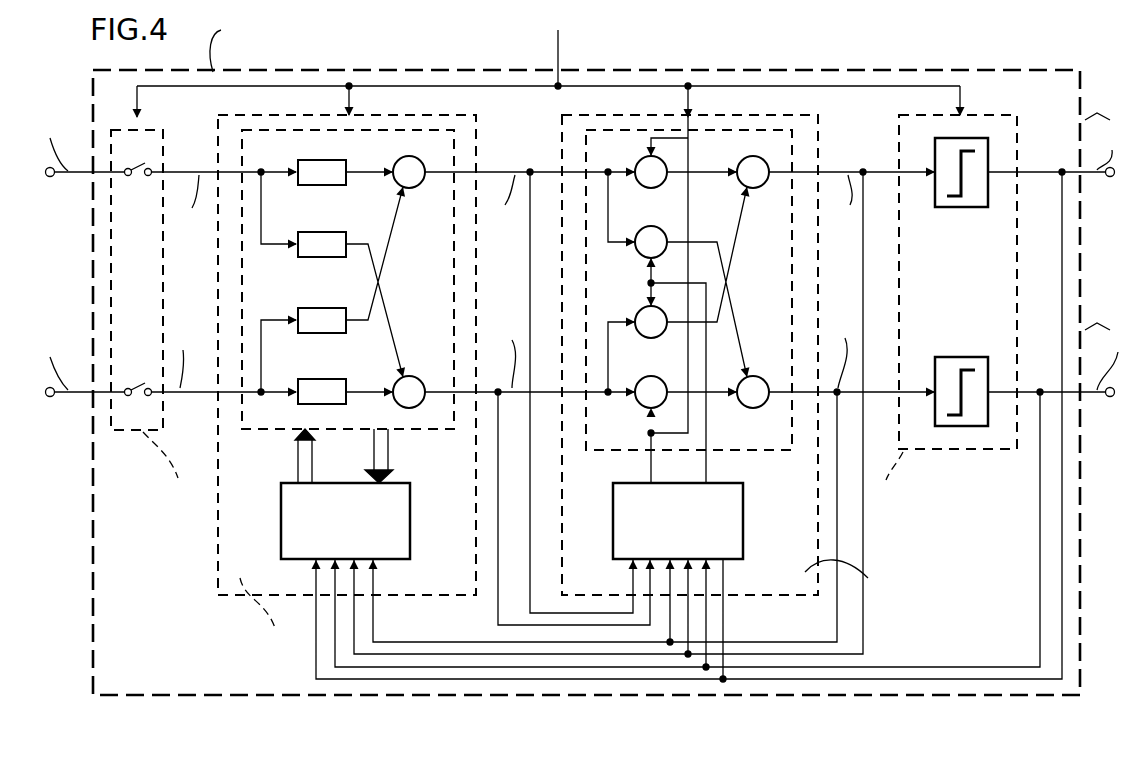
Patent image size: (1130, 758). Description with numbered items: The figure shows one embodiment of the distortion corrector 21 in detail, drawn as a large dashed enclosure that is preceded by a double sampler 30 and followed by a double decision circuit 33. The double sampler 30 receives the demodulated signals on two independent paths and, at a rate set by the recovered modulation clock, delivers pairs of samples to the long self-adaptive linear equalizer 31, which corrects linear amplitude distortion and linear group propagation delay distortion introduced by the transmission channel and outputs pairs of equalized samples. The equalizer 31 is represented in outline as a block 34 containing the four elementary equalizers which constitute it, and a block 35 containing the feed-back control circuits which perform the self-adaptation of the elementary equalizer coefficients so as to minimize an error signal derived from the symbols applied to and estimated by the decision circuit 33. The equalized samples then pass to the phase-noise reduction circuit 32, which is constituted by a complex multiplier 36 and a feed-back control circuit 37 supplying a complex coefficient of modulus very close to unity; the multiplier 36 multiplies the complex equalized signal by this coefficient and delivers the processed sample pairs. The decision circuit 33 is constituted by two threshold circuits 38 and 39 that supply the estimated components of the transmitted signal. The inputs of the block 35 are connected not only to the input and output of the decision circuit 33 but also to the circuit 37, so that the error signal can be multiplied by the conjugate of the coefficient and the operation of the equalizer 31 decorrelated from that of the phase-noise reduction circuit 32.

The distortion corrector 21 is at (878, 78).
The double sampler 30 is at (152, 140).
The self-adaptive linear equalizer 31 is at (472, 142).
The phase-noise reduction circuit 32 is at (818, 143).
The double decision circuit 33 is at (1018, 143).
The block containing the four elementary equalizers 34 is at (436, 412).
The feed-back control circuits 35 is at (281, 505).
The complex multiplier 36 is at (765, 452).
The complex coefficient circuit 37 is at (613, 492).
The threshold circuit 38 is at (972, 197).
The threshold circuit 39 is at (948, 357).